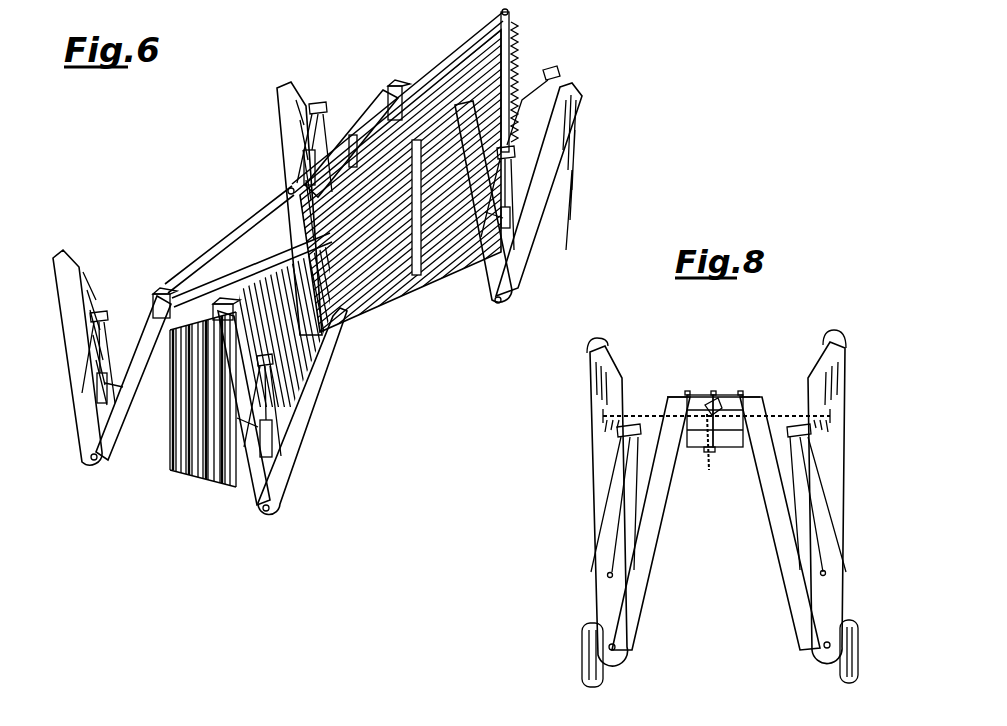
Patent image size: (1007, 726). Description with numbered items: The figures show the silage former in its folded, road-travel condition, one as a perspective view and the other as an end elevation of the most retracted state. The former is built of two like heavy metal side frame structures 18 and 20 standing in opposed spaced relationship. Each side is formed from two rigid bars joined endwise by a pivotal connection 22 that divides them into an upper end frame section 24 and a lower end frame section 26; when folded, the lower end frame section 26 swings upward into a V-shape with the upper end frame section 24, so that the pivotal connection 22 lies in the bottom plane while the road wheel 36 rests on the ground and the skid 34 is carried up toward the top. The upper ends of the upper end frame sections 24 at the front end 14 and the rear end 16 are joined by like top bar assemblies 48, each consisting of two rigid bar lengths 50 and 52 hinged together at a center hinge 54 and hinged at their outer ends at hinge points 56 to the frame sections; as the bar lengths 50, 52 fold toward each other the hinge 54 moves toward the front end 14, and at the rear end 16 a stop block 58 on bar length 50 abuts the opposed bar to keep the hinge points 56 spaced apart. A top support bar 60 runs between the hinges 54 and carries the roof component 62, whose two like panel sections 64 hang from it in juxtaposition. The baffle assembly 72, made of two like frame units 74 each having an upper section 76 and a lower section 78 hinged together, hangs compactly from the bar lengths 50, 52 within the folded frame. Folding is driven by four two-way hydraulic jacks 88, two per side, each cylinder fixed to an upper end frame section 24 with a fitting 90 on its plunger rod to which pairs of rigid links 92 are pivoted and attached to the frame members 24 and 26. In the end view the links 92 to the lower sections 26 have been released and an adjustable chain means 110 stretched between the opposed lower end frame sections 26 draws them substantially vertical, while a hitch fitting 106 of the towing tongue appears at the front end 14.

In FIG. 6, the front end 14 is at (536, 45).
In FIG. 6, the rear end 16 is at (134, 495).
In FIG. 8, the side frame structure 18 is at (843, 463).
In FIG. 8, the side frame structure 20 is at (584, 460).
In FIG. 6, the pivotal connection 22 is at (495, 302).
In FIG. 8, the pivotal connection 22 is at (616, 648).
In FIG. 6, the upper end frame section 24 is at (490, 282).
In FIG. 6, the lower end frame section 26 is at (277, 106).
In FIG. 8, the lower end frame section 26 is at (590, 390).
In FIG. 8, the skid 34 is at (598, 340).
In FIG. 8, the road wheel 36 is at (585, 628).
In FIG. 6, the top bar assembly 48 is at (448, 38).
In FIG. 6, the rigid bar length 50 is at (509, 31).
In FIG. 8, the rigid bar length 50 is at (728, 395).
In FIG. 6, the rigid bar length 52 is at (433, 72).
In FIG. 8, the rigid bar length 52 is at (700, 395).
In FIG. 6, the hinge 54 is at (509, 11).
In FIG. 6, the hinge point 56 is at (391, 84).
In FIG. 6, the stop block 58 is at (190, 297).
In FIG. 8, the stop block 58 is at (722, 450).
In FIG. 6, the top support bar 60 is at (356, 166).
In FIG. 6, the roof component 62 is at (392, 306).
In FIG. 6, the panel section 64 is at (417, 278).
In FIG. 6, the baffle assembly 72 is at (175, 488).
In FIG. 6, the frame unit 74 is at (210, 496).
In FIG. 6, the upper section 76 is at (196, 485).
In FIG. 6, the lower section 78 is at (216, 478).
In FIG. 6, the hydraulic jack 88 is at (308, 170).
In FIG. 6, the fitting 90 is at (317, 102).
In FIG. 6, the link 92 is at (304, 142).
In FIG. 8, the link 92 is at (596, 513).
In FIG. 6, the hitch fitting 106 is at (558, 72).
In FIG. 8, the chain means 110 is at (780, 412).